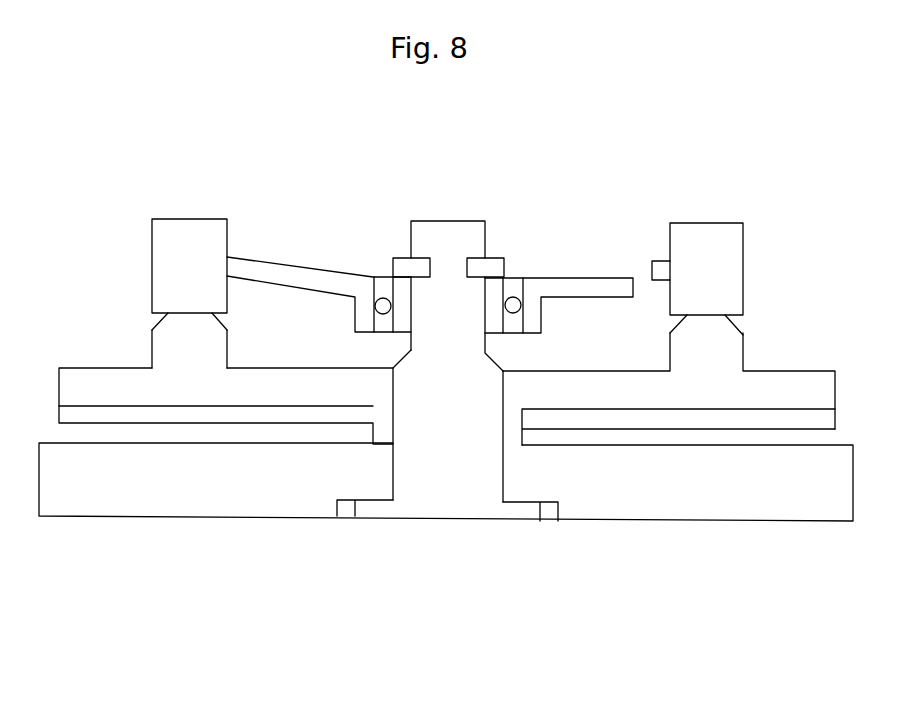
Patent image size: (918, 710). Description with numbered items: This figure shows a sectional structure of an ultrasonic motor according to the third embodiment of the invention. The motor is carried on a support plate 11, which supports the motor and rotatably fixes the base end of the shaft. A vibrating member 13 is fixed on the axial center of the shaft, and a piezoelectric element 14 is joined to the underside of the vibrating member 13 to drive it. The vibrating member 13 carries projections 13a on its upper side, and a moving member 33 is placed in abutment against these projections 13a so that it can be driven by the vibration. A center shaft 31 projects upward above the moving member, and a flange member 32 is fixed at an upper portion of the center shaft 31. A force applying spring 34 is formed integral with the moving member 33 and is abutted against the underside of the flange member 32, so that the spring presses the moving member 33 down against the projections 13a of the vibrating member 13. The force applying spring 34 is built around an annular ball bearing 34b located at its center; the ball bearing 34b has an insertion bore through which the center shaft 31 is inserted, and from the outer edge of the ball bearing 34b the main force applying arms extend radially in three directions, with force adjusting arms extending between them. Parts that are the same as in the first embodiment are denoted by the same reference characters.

The support plate 11 is at (705, 502).
The vibrating member 13 is at (300, 387).
The projections 13a is at (727, 362).
The piezoelectric element 14 is at (670, 429).
The center shaft 31 is at (432, 221).
The flange member 32 is at (492, 267).
The moving member 33 is at (174, 219).
The force applying spring 34 is at (260, 263).
The annular ball bearing 34b is at (513, 322).